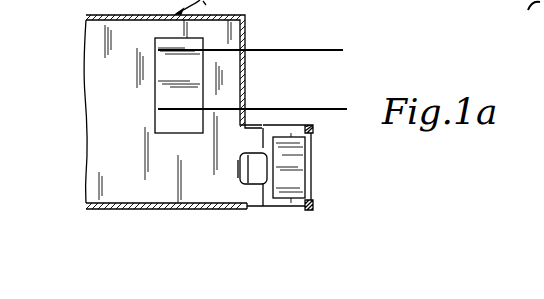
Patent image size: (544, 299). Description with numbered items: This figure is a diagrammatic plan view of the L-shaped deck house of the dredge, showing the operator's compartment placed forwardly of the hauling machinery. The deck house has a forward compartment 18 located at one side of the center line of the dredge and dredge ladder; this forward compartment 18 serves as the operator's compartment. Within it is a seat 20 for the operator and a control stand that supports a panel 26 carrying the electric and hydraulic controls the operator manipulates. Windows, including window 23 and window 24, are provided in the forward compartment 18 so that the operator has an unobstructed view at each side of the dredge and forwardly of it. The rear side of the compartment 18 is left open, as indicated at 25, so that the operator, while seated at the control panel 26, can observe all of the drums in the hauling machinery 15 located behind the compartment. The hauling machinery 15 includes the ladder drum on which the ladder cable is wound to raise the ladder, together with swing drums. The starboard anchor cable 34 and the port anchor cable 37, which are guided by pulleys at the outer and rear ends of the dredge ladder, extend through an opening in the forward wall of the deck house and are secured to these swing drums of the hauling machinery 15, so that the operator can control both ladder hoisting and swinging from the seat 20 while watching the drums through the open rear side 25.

The hauling machinery 15 is at (155, 95).
The anchor cable 37 is at (308, 50).
The anchor cable 34 is at (336, 108).
The window 24 is at (265, 127).
The open rear side 25 is at (224, 156).
The panel 26 is at (297, 155).
The window 23 is at (312, 158).
The seat 20 is at (249, 186).
The forward compartment 18 is at (294, 206).